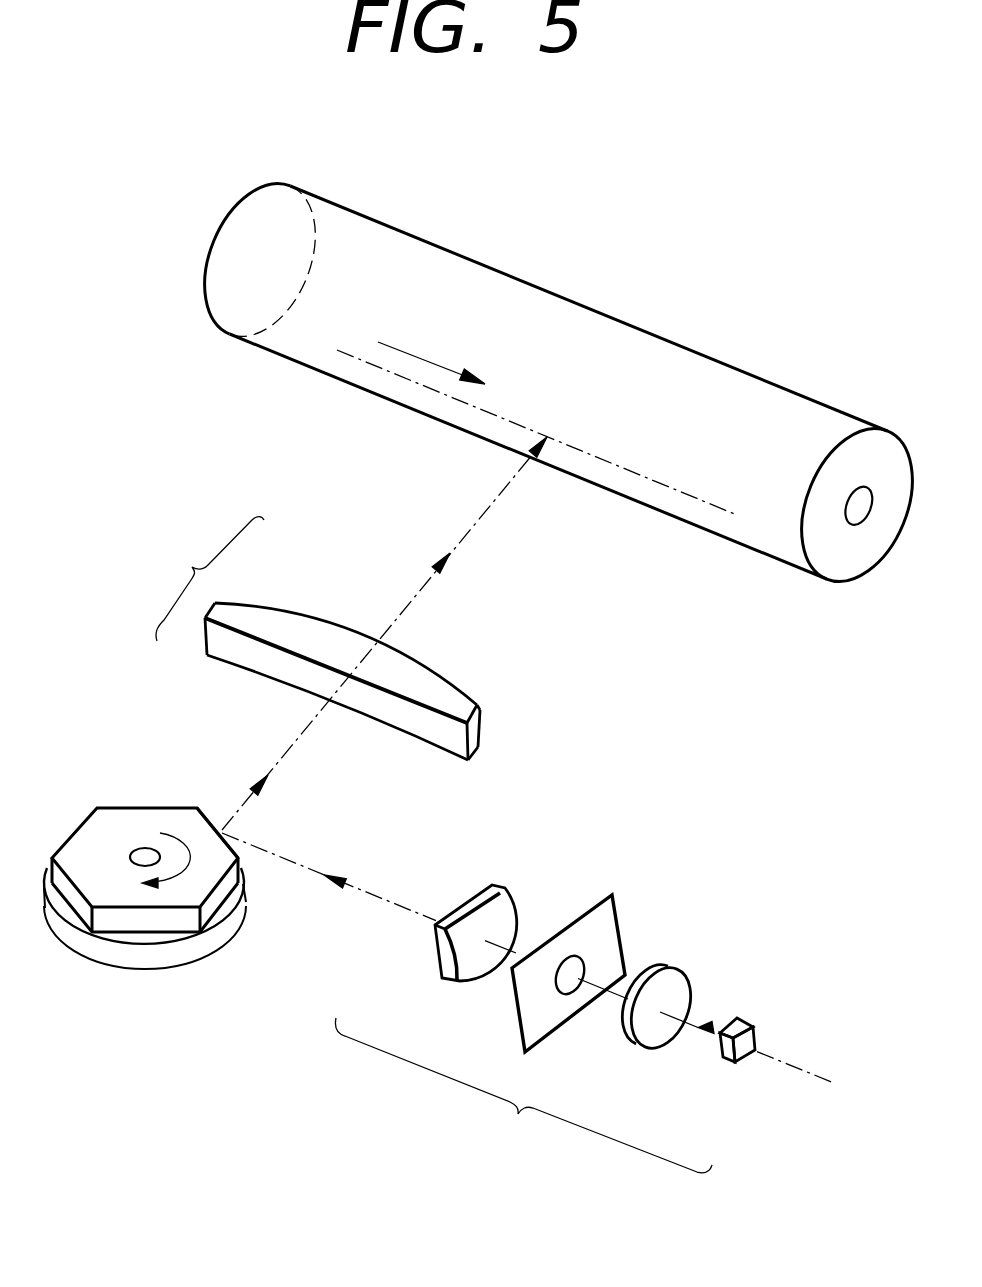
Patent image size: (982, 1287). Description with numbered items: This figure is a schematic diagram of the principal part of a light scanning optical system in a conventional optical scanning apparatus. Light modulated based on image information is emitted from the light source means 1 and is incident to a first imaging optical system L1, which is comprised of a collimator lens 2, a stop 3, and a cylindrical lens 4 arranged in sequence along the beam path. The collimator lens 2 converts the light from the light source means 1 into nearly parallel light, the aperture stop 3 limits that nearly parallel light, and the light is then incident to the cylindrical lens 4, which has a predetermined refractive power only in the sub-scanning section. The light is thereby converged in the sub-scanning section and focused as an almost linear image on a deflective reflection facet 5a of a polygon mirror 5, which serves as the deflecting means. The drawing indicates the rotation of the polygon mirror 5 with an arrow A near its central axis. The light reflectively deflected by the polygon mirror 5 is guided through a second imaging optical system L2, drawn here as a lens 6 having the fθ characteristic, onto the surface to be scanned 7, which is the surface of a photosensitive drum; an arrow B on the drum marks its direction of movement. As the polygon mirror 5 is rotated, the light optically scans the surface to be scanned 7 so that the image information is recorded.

The light source means 1 is at (720, 1058).
The collimator lens 2 is at (654, 1040).
The aperture stop 3 is at (528, 1003).
The cylindrical lens 4 is at (448, 955).
The polygon mirror 5 is at (97, 852).
The deflective reflection facet 5a is at (203, 809).
The f-theta imaging lens 6 is at (293, 624).
The surface to be scanned 7 is at (726, 541).
The rotation direction of polygon mirror A is at (165, 880).
The rotation direction of drum B is at (419, 360).
The first imaging optical system L1 is at (523, 1095).
The second imaging optical system L2 is at (208, 579).